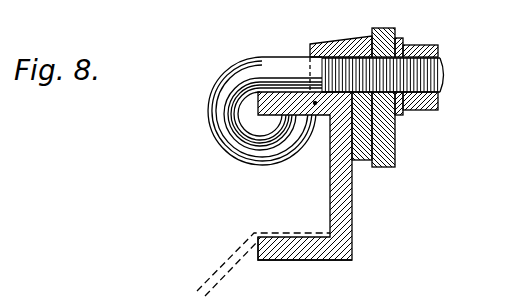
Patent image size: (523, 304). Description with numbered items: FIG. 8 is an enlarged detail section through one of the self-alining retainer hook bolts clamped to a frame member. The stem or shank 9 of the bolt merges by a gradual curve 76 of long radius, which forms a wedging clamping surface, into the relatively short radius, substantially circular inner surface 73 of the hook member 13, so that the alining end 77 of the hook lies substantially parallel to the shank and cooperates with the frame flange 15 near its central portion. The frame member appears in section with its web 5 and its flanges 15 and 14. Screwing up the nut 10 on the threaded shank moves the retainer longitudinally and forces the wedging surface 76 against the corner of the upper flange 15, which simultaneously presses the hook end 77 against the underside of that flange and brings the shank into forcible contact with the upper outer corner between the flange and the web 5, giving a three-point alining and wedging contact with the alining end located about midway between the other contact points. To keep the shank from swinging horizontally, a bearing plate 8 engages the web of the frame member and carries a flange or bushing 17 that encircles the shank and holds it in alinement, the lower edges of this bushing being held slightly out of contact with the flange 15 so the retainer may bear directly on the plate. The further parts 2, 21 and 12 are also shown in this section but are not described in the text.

The clamping nut 2 is at (388, 29).
The web 5 is at (353, 223).
The bearing plate 8 is at (362, 162).
The stem or shank 9 is at (443, 77).
The nut 10 is at (441, 105).
The sheet 12 is at (226, 258).
The hook member 13 is at (218, 105).
The flange 14 is at (284, 250).
The frame flange 15 is at (258, 115).
The flange or bushing 17 is at (356, 25).
The washer 21 is at (399, 113).
The inner surface of hook member 73 is at (259, 130).
The gradual curve 76 is at (261, 90).
The alining end 77 is at (299, 133).